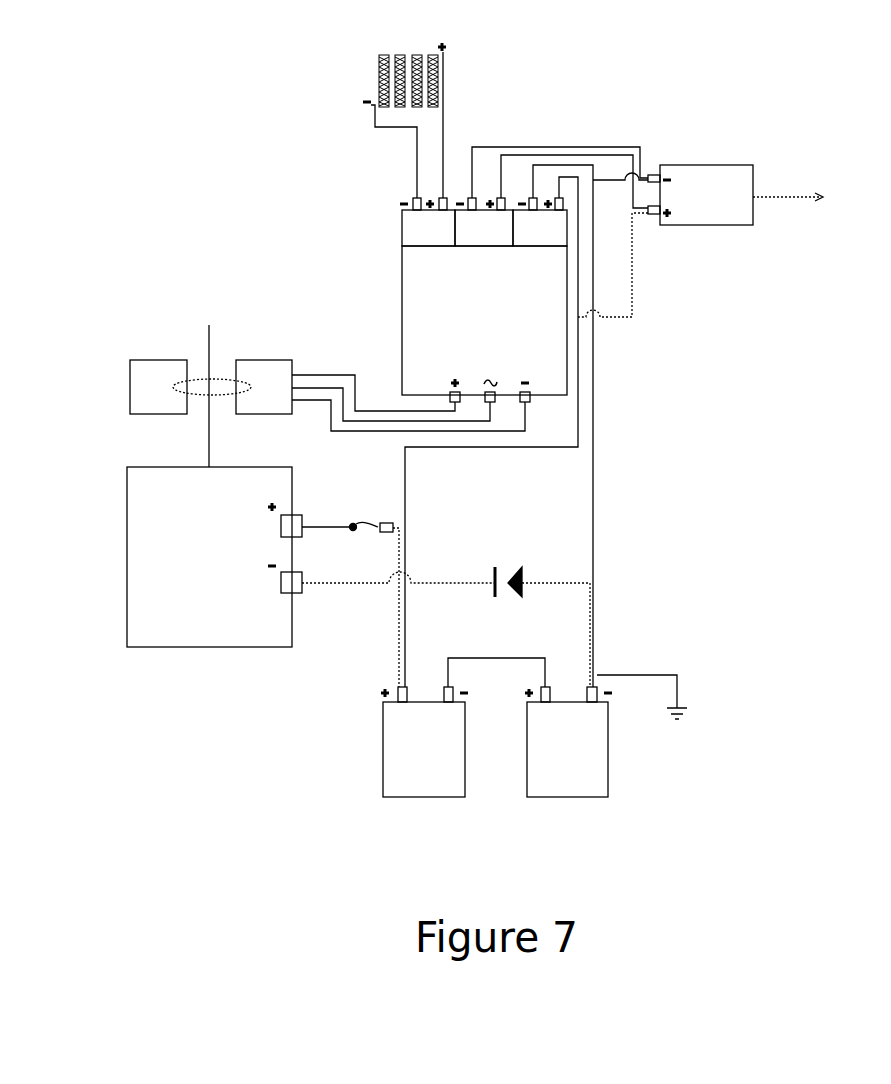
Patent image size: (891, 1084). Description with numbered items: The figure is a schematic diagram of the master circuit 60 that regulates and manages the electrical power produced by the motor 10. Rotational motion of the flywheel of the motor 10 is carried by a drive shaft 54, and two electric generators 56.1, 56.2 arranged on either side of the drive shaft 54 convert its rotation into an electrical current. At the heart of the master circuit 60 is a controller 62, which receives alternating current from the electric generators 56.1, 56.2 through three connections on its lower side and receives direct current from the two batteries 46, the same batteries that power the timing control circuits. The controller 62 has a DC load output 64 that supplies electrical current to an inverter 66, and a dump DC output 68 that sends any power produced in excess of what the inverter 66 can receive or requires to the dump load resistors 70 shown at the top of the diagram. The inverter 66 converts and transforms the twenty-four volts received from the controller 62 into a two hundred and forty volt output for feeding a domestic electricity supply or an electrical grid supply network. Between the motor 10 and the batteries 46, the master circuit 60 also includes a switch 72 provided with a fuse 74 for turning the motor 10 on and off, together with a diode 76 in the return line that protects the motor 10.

The motor 10 is at (188, 567).
The batteries 46 is at (543, 765).
The drive shaft 54 is at (211, 337).
The electric generator 56.1 is at (157, 368).
The electric generator 56.2 is at (265, 368).
The master circuit 60 is at (805, 107).
The controller 62 is at (473, 330).
The DC load output 64 is at (470, 240).
The inverter 66 is at (693, 209).
The dump DC output 68 is at (413, 240).
The dump load resistors 70 is at (380, 58).
The switch 72 is at (365, 520).
The fuse 74 is at (393, 523).
The diode 76 is at (513, 568).